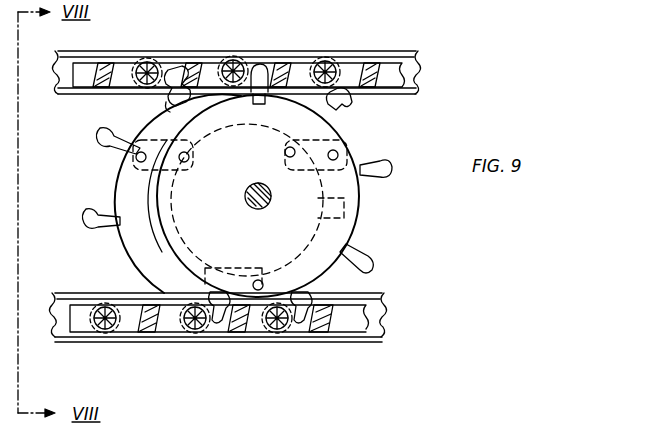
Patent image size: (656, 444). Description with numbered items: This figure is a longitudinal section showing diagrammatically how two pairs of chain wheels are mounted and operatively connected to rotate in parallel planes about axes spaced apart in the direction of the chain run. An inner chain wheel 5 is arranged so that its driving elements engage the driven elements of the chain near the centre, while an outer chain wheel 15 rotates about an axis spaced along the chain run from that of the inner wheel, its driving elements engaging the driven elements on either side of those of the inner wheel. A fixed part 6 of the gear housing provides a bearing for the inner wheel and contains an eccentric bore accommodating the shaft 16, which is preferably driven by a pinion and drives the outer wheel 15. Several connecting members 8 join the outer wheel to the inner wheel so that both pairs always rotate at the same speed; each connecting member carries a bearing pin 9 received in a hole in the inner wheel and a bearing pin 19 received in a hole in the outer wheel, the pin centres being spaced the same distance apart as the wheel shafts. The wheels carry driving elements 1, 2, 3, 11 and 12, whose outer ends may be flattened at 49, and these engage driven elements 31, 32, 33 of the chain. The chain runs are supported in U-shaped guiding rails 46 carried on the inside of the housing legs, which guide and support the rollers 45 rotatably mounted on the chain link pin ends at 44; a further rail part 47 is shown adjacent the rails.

The driving element 1 is at (345, 108).
The driving element 2 is at (257, 63).
The driving element 3 is at (166, 104).
The inner chain wheel 5 is at (128, 186).
The fixed part of gear housing 6 is at (145, 196).
The connecting member 8 is at (161, 142).
The bearing pin 9 is at (134, 157).
The driving element 11 is at (226, 55).
The driving element 12 is at (190, 72).
The outer chain wheel 15 is at (345, 207).
The shaft 16 is at (255, 186).
The bearing pin 19 is at (187, 163).
The driven element 31 is at (372, 62).
The driven element 32 is at (280, 62).
The driven element 33 is at (193, 62).
The chain link pin end 44 is at (326, 60).
The roller 45 is at (138, 62).
The guiding rail 46 is at (420, 73).
The rail plate 47 is at (412, 60).
The flattened end 49 is at (100, 132).